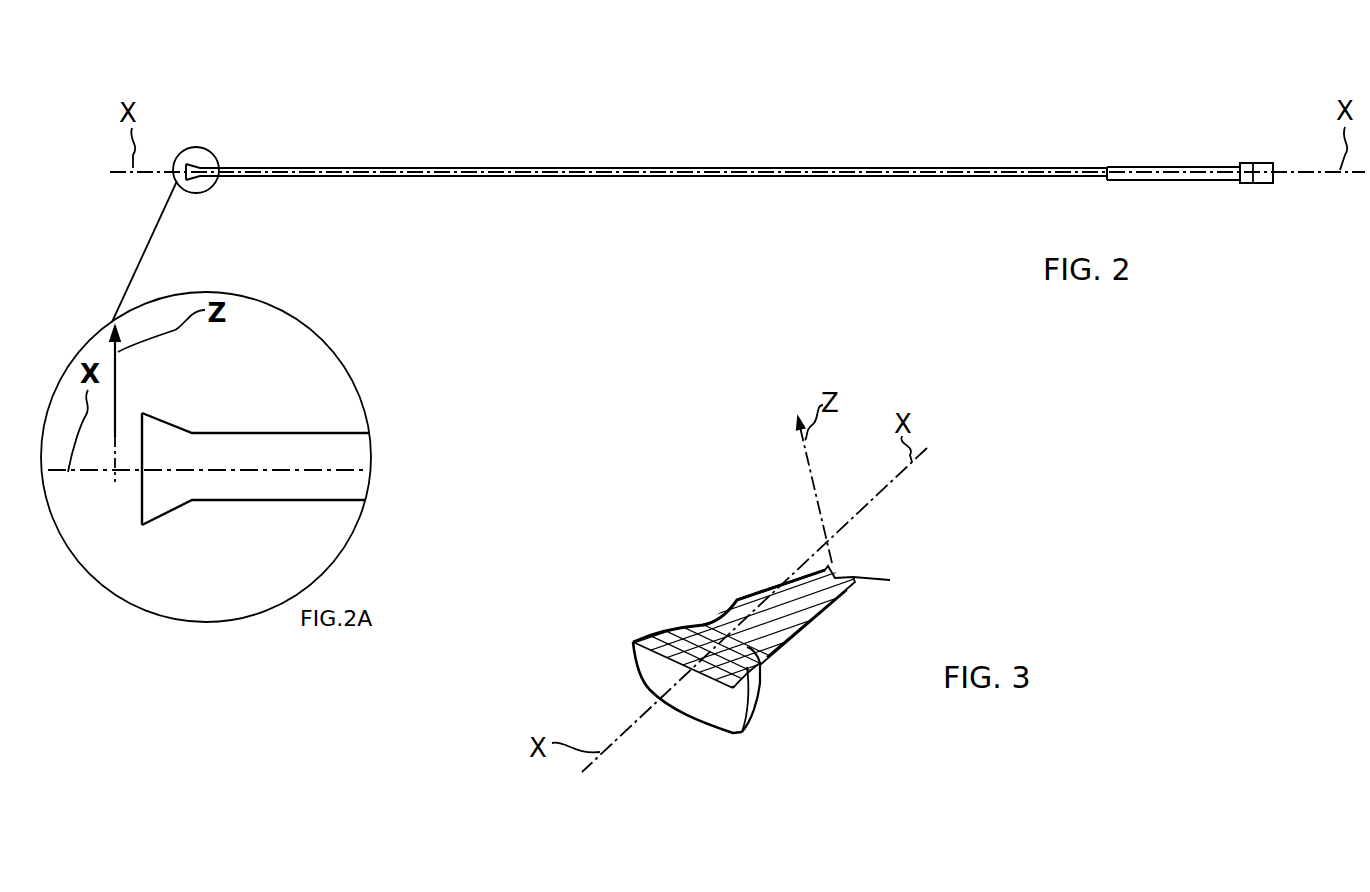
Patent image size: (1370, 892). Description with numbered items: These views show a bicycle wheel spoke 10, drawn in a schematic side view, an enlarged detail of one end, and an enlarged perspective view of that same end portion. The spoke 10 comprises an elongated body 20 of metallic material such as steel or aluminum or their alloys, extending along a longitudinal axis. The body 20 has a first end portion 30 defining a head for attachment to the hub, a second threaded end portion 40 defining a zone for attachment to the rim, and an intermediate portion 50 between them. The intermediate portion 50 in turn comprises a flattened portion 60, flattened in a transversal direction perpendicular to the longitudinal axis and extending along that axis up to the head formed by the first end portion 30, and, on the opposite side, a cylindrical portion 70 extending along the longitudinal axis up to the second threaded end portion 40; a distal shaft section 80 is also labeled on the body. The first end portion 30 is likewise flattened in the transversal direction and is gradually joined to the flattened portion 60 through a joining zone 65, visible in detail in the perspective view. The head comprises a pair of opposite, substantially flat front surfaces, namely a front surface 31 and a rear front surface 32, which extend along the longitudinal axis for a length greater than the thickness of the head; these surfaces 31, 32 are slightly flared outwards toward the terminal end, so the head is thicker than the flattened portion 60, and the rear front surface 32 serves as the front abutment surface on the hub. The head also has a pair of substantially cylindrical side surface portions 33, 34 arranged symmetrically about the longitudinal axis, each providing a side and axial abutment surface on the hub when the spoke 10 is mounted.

In FIG. 2, the spoke 10 is at (692, 198).
In FIG. 2, the elongated body 20 is at (633, 168).
In FIG. 3, the elongated body 20 is at (824, 577).
In FIG. 2, the first end portion 30 is at (175, 188).
In FIG. 2A, the first end portion 30 is at (235, 462).
In FIG. 3, the first end portion 30 is at (691, 648).
In FIG. 2A, the front surface 31 is at (142, 408).
In FIG. 3, the front surface 31 is at (688, 643).
In FIG. 2A, the rear front surface 32 is at (168, 513).
In FIG. 3, the rear front surface 32 is at (698, 737).
In FIG. 3, the cylindrical side surface portion 33 is at (627, 637).
In FIG. 3, the cylindrical side surface portion 34 is at (757, 700).
In FIG. 2, the second threaded end portion 40 is at (1257, 168).
In FIG. 2, the intermediate portion 50 is at (748, 183).
In FIG. 2, the flattened portion 60 is at (582, 177).
In FIG. 3, the flattened portion 60 is at (768, 580).
In FIG. 2, the joining zone 65 is at (200, 183).
In FIG. 3, the joining zone 65 is at (717, 637).
In FIG. 2, the cylindrical portion 70 is at (1165, 170).
In FIG. 2, the distal shaft section 80 is at (247, 167).
In FIG. 3, the distal shaft section 80 is at (814, 634).